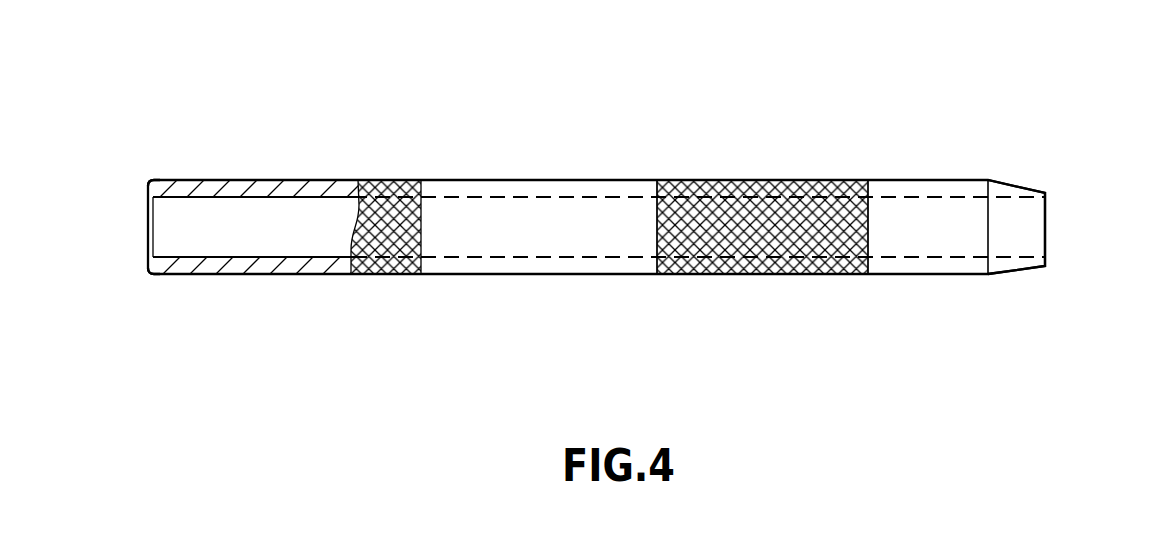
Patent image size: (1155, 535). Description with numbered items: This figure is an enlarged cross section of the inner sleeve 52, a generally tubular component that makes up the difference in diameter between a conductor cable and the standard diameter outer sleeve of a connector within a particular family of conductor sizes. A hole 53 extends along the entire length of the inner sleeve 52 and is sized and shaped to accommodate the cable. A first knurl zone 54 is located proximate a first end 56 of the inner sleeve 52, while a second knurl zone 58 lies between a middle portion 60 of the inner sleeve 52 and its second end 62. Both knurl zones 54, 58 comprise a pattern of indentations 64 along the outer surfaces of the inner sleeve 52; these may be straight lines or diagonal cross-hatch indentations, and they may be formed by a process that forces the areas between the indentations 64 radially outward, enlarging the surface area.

The inner sleeve 52 is at (163, 101).
The hole 53 is at (1046, 207).
The first knurl zone 54 is at (177, 147).
The first end 56 is at (152, 274).
The second knurl zone 58 is at (867, 148).
The middle portion 60 is at (422, 309).
The second end 62 is at (988, 275).
The indentations 64 is at (385, 240).